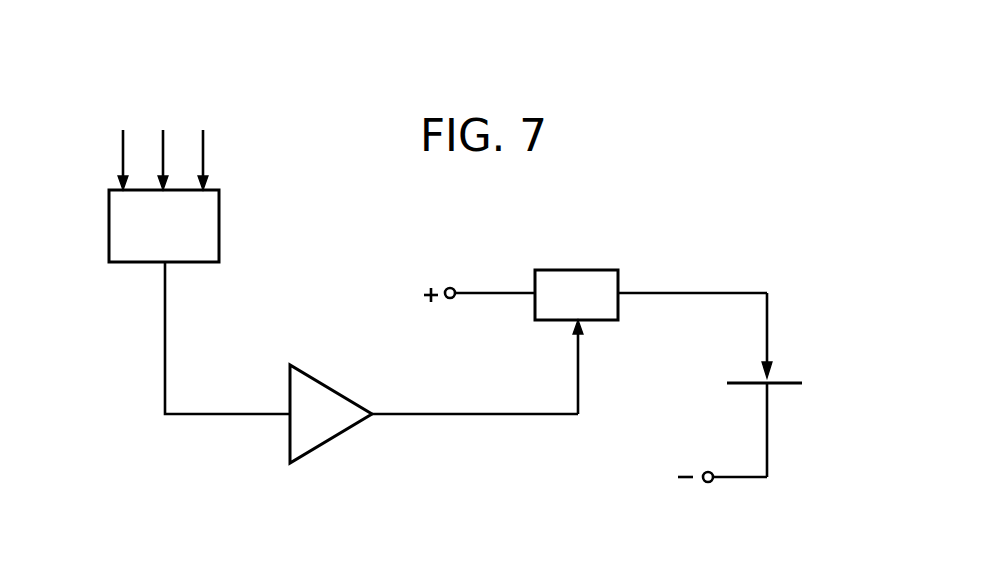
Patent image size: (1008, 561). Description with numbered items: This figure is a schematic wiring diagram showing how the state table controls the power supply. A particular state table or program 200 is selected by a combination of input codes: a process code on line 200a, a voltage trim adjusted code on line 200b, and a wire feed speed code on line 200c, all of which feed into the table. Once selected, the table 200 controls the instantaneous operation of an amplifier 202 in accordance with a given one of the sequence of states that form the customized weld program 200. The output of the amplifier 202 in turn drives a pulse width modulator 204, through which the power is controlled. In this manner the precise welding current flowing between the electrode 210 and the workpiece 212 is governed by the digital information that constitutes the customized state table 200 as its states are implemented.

The state table 200 is at (212, 248).
The process code line 200a is at (122, 148).
The voltage trim adjusted code line 200b is at (162, 147).
The wire feed speed code line 200c is at (203, 148).
The amplifier 202 is at (320, 397).
The pulse width modulator 204 is at (582, 277).
The electrode 210 is at (770, 353).
The workpiece 212 is at (792, 384).